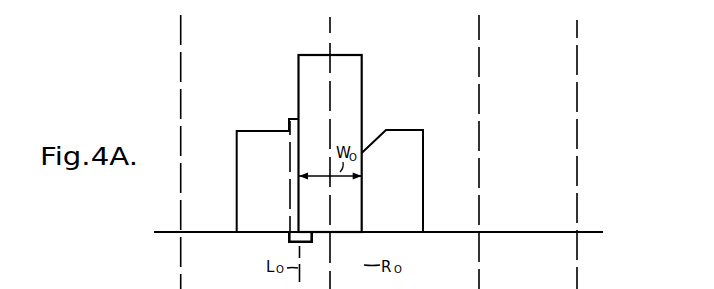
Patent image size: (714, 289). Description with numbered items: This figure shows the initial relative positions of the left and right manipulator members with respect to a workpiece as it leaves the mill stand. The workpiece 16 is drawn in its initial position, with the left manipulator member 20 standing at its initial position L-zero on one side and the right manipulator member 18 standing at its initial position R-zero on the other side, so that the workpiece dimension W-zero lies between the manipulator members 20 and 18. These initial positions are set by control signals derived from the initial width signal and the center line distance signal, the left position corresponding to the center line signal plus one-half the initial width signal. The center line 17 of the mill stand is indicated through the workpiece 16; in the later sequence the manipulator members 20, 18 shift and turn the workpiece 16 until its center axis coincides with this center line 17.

The workpiece 16 is at (355, 91).
The center line 17 is at (333, 28).
The right manipulator member 18 is at (412, 163).
The left manipulator member 20 is at (245, 157).